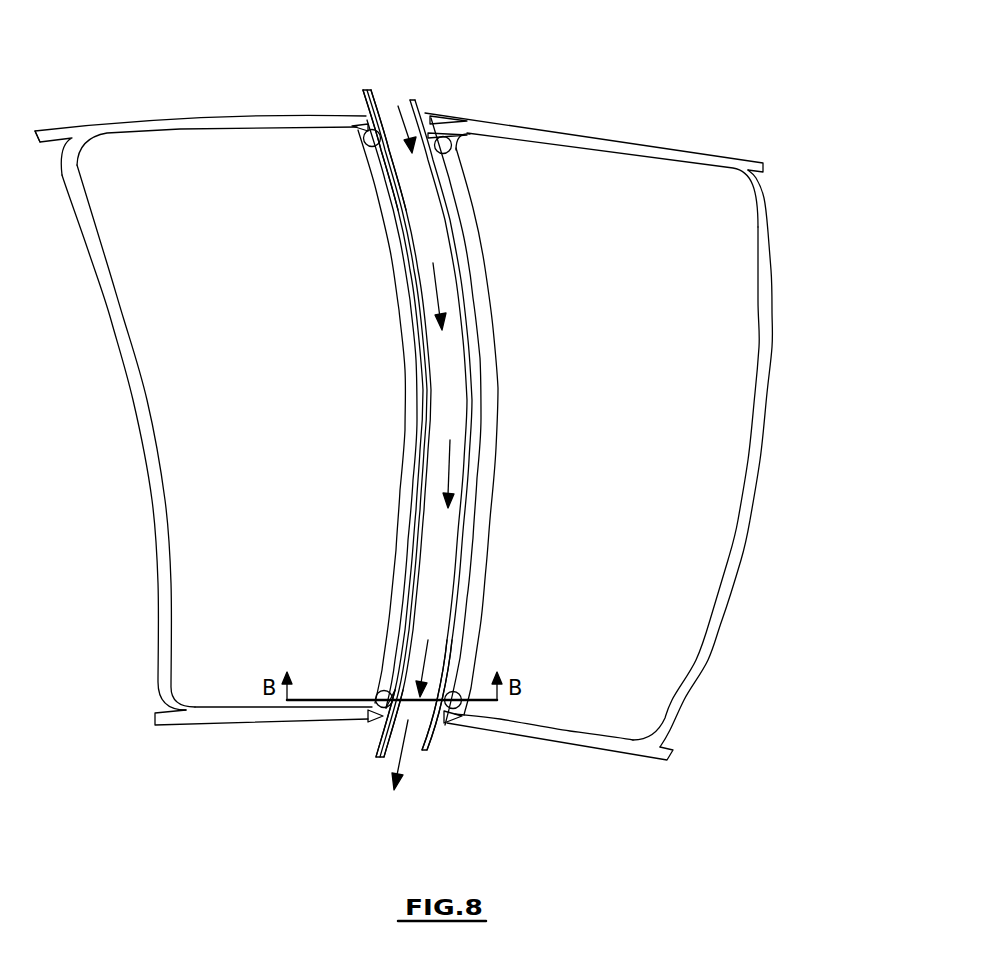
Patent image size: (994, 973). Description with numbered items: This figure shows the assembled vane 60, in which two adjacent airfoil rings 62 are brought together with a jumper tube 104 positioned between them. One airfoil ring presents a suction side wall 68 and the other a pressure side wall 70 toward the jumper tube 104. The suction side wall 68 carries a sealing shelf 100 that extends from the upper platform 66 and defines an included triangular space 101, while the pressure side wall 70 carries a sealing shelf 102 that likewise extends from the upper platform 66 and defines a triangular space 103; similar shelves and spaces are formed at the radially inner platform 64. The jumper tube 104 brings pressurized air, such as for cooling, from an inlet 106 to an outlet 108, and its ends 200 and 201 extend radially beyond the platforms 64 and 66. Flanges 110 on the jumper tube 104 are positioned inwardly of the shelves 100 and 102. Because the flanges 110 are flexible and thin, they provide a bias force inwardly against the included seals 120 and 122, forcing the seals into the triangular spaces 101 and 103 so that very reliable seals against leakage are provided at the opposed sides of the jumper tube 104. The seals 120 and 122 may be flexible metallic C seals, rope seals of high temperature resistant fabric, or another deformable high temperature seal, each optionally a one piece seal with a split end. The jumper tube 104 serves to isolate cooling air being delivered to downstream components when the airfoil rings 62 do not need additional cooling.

The vane 60 is at (820, 470).
The airfoil rings 62 is at (158, 617).
The platform 64 is at (248, 712).
The upper platform 66 is at (212, 122).
The suction side wall 68 is at (497, 352).
The pressure side wall 70 is at (410, 457).
The sealing shelf 100 is at (366, 110).
The triangular space 101 is at (357, 128).
The sealing shelf 102 is at (455, 124).
The triangular space 103 is at (455, 138).
The jumper tube 104 is at (423, 102).
The inlet 106 is at (387, 107).
The outlet 108 is at (430, 757).
The flanges 110 is at (376, 133).
The seal 120 is at (382, 693).
The seal 122 is at (456, 150).
The end 200 is at (373, 105).
The end 201 is at (382, 760).